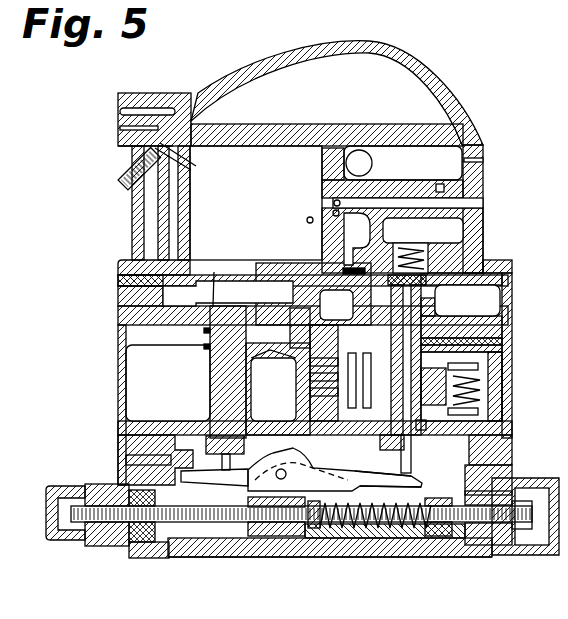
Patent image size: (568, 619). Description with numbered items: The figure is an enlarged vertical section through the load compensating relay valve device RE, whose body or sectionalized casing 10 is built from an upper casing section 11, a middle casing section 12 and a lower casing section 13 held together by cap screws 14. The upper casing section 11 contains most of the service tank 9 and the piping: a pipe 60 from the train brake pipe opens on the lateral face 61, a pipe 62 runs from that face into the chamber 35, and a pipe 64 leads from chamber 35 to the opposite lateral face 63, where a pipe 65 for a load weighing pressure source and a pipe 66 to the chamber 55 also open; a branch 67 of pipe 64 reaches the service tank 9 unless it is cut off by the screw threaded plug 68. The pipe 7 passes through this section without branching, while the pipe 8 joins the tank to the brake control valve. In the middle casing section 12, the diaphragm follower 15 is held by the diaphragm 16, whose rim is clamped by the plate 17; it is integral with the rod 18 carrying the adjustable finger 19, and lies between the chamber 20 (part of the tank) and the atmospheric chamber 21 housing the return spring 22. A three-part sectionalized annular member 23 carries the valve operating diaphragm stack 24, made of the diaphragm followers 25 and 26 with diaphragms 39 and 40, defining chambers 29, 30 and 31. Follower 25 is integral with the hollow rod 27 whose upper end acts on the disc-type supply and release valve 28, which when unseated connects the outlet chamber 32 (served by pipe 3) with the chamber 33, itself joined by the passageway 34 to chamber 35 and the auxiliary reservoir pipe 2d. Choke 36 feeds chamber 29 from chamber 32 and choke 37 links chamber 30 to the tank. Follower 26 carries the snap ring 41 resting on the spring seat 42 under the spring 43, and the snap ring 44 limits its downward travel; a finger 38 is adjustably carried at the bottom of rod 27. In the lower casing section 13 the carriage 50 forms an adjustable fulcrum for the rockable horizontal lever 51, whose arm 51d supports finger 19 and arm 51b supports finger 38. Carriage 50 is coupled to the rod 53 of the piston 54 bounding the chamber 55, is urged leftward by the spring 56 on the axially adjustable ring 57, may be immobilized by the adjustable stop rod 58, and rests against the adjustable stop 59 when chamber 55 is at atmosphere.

The passage 2d is at (365, 155).
The pipe 3 is at (357, 239).
The pipe 7 is at (326, 208).
The pipe 8 is at (302, 215).
The service tank 9 is at (236, 224).
The body or sectionalized casing 10 is at (121, 227).
The upper casing section 11 is at (130, 193).
The middle casing section 12 is at (112, 401).
The lower casing section 13 is at (118, 436).
The cap screws 14 is at (492, 258).
The diaphragm follower 15 is at (213, 275).
The diaphragm 16 is at (128, 297).
The plate 17 is at (130, 278).
The rod 18 is at (215, 378).
The finger 19 is at (214, 453).
The chamber 20 is at (270, 285).
The chamber 21 is at (196, 323).
The return spring 22 is at (196, 339).
The sectionalized annular member 23 is at (490, 346).
The valve operating diaphragm stack 24 is at (456, 332).
The diaphragm follower 25 is at (452, 330).
The diaphragm follower 26 is at (313, 386).
The hollow rod 27 is at (465, 392).
The disc-type supply and release valve 28 is at (412, 257).
The chamber 29 is at (471, 330).
The chamber 30 is at (311, 371).
The chamber 31 is at (344, 402).
The chamber 32 is at (494, 284).
The chamber 33 is at (446, 222).
The passageway 34 is at (432, 182).
The chamber 35 is at (420, 140).
The choke 36 is at (345, 262).
The choke 37 is at (311, 356).
The finger 38 is at (404, 459).
The diaphragm 39 is at (336, 303).
The diaphragm 40 is at (470, 374).
The snap ring 41 is at (358, 402).
The spring seat 42 is at (418, 422).
The spring 43 is at (465, 410).
The snap ring 44 is at (378, 430).
The carriage 50 is at (270, 529).
The rockable horizontal lever 51 is at (264, 455).
The lever arm 51b is at (406, 473).
The lever arm 51d is at (245, 470).
The rod 53 is at (205, 516).
The piston 54 is at (148, 537).
The chamber 55 is at (112, 527).
The spring 56 is at (395, 522).
The axially adjustable ring 57 is at (432, 529).
The adjustable stop rod 58 is at (307, 522).
The adjustable stop 59 is at (80, 522).
The pipe 60 is at (466, 196).
The lateral face 61 is at (477, 136).
The pipe 62 is at (478, 152).
The lateral face 63 is at (109, 90).
The pipe 64 is at (114, 138).
The pipe 65 is at (152, 103).
The pipe 66 is at (115, 120).
The branch 67 is at (155, 143).
The screw threaded plug 68 is at (117, 171).
The load compensating relay valve device RE is at (447, 556).